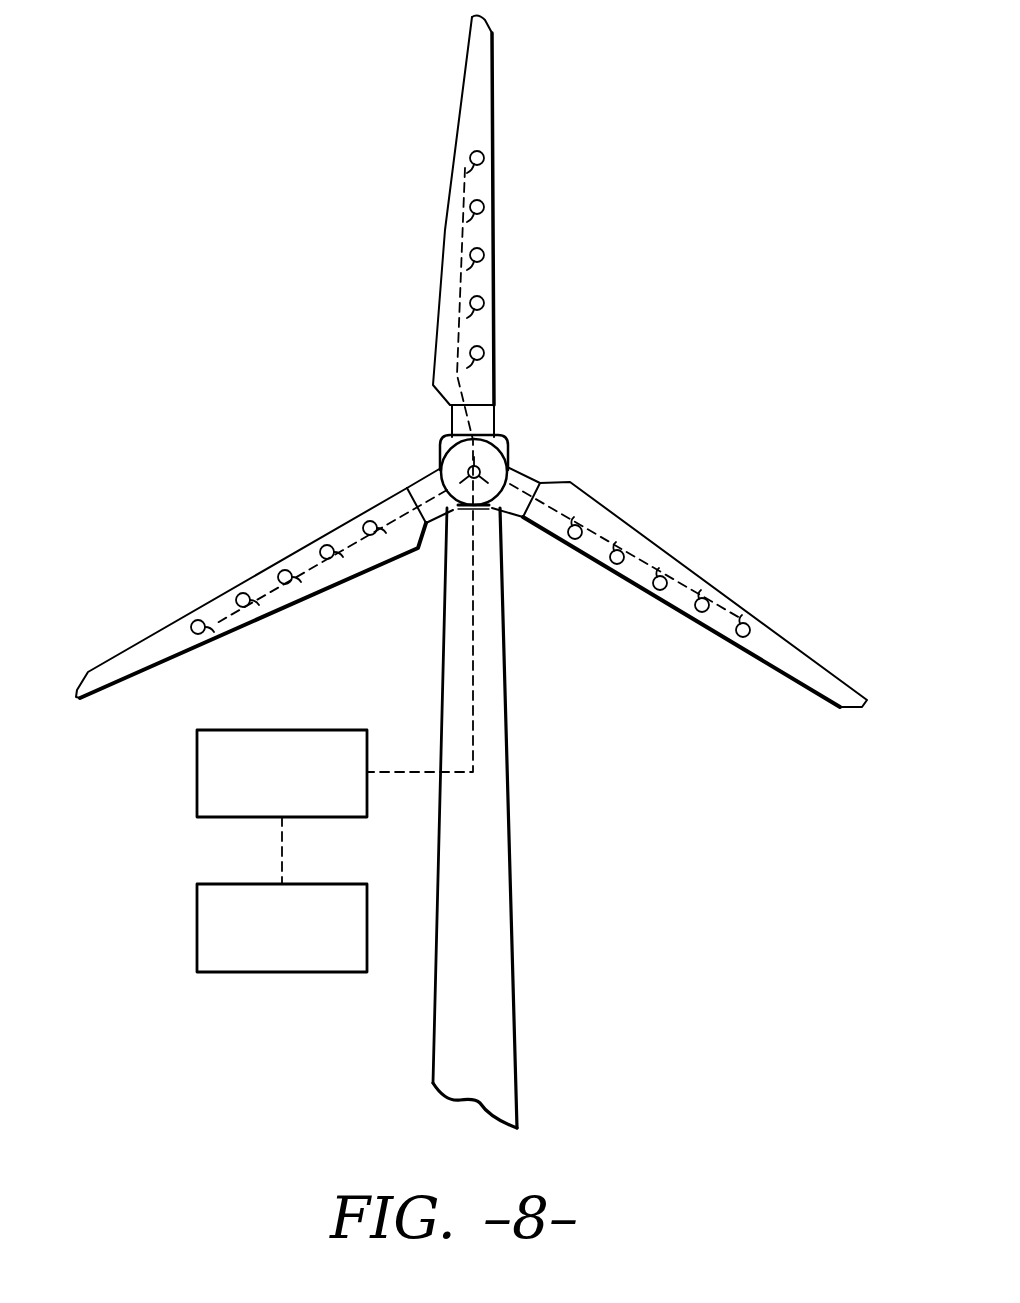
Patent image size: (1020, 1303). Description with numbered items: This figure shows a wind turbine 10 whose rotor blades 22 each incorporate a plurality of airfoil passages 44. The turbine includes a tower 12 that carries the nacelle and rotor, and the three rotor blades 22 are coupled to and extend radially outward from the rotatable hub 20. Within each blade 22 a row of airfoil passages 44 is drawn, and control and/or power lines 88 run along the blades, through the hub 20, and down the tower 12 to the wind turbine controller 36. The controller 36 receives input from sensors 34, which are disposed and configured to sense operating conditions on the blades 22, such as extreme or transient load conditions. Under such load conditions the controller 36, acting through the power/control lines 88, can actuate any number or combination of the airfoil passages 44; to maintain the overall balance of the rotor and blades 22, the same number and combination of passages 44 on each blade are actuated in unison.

The wind turbine 10 is at (624, 150).
The tower 12 is at (495, 992).
The hub 20 is at (477, 458).
The rotor blades 22 is at (480, 93).
The airfoil passages 44 is at (483, 207).
The control lines 88 is at (458, 255).
The sensors 34 is at (207, 932).
The wind turbine controller 36 is at (207, 777).